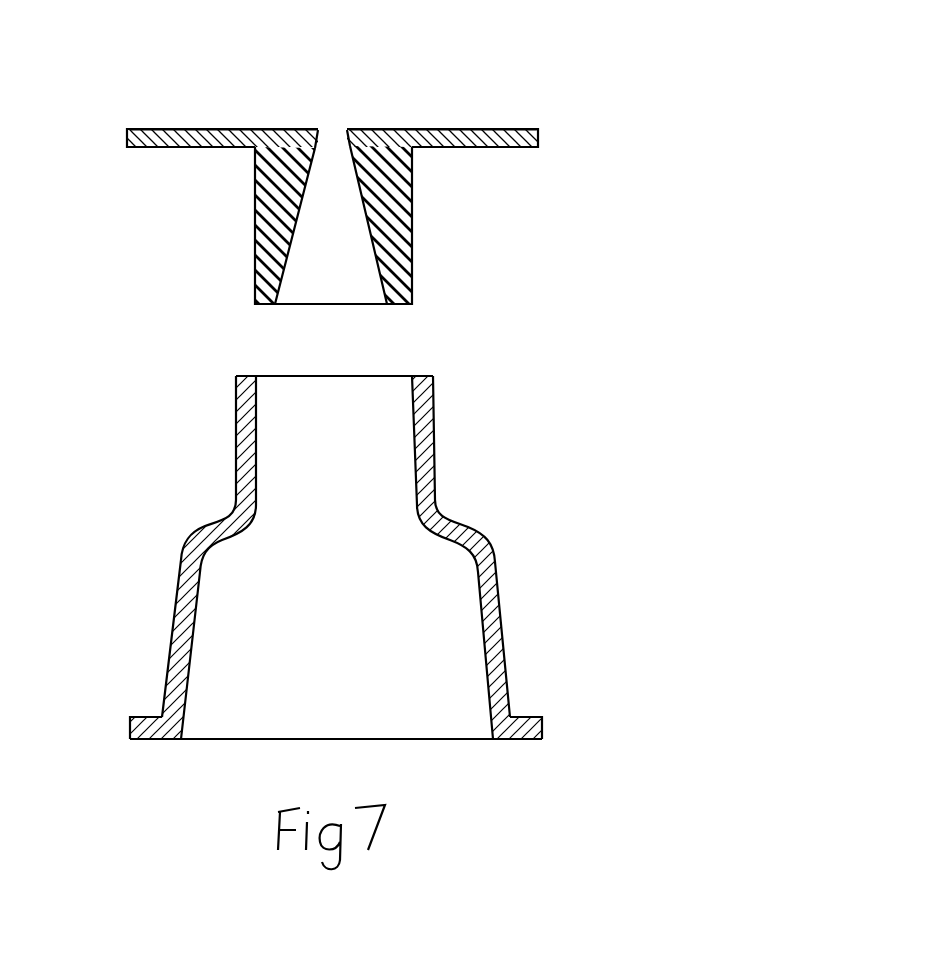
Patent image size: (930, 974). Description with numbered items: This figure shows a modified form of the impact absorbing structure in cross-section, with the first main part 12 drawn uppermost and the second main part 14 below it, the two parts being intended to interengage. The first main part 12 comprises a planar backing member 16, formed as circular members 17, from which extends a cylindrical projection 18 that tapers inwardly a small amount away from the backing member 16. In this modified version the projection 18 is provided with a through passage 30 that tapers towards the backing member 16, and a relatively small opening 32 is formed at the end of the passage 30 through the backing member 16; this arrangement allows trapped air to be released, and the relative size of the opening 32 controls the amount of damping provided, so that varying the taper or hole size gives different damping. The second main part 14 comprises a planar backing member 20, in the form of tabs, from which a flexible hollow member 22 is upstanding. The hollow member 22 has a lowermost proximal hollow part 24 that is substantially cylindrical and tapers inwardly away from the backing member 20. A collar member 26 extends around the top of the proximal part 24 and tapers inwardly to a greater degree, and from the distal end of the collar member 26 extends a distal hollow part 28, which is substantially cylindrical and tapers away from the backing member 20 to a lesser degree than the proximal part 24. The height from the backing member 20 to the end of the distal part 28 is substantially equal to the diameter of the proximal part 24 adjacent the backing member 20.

The first main part 12 is at (452, 171).
The second main part 14 is at (395, 611).
The planar backing member 16 is at (497, 102).
The circular members 17 is at (185, 130).
The cylindrical projections 18 is at (412, 228).
The planar backing member 20 is at (351, 781).
The flexible hollow members 22 is at (213, 463).
The proximal hollow part 24 is at (505, 652).
The collar member 26 is at (455, 523).
The distal hollow part 28 is at (422, 422).
The through passage 30 is at (327, 230).
The opening 32 is at (362, 94).